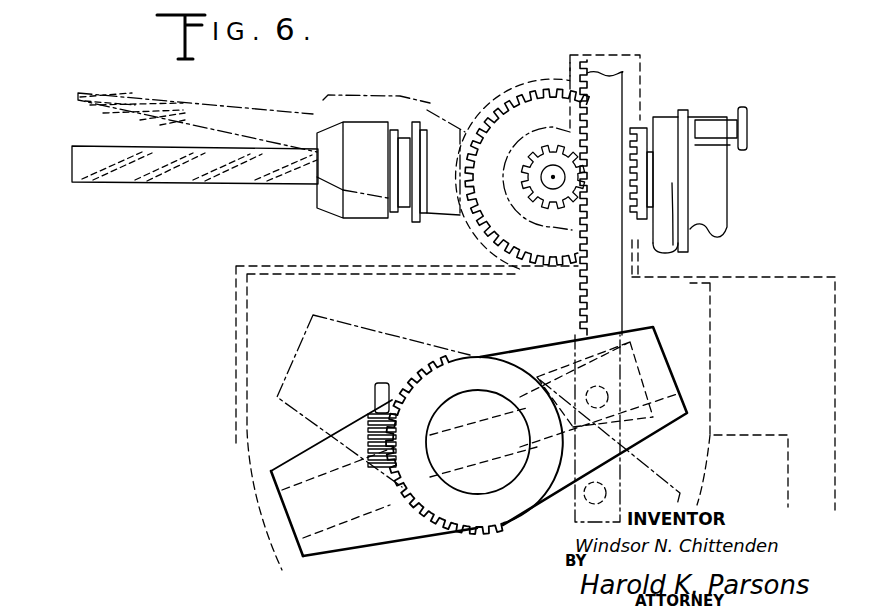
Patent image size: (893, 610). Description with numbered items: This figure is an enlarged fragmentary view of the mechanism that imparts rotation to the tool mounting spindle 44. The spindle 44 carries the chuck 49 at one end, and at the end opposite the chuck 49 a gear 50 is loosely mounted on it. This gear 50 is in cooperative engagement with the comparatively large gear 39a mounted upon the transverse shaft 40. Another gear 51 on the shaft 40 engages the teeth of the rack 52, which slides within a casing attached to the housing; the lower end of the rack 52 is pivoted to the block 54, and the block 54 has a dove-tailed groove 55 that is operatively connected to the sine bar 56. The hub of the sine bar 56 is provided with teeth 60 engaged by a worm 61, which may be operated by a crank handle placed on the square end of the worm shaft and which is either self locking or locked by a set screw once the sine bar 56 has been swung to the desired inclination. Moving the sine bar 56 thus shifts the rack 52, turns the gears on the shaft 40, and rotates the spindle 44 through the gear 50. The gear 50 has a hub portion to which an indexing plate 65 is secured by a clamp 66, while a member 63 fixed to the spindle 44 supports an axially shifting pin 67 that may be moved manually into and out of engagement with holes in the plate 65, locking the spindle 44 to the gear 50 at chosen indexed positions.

The gear 39a is at (500, 100).
The shaft 40 is at (545, 175).
The spindle 44 is at (404, 212).
The chuck 49 is at (358, 138).
The gear 50 is at (645, 132).
The gear 51 is at (535, 198).
The rack 52 is at (623, 90).
The block 54 is at (660, 362).
The dove-tailed groove 55 is at (362, 515).
The sine bar 56 is at (400, 527).
The teeth 60 is at (425, 372).
The worm 61 is at (370, 422).
The member 63 is at (713, 172).
The indexing plate 65 is at (690, 232).
The clamp 66 is at (665, 243).
The pin 67 is at (746, 122).